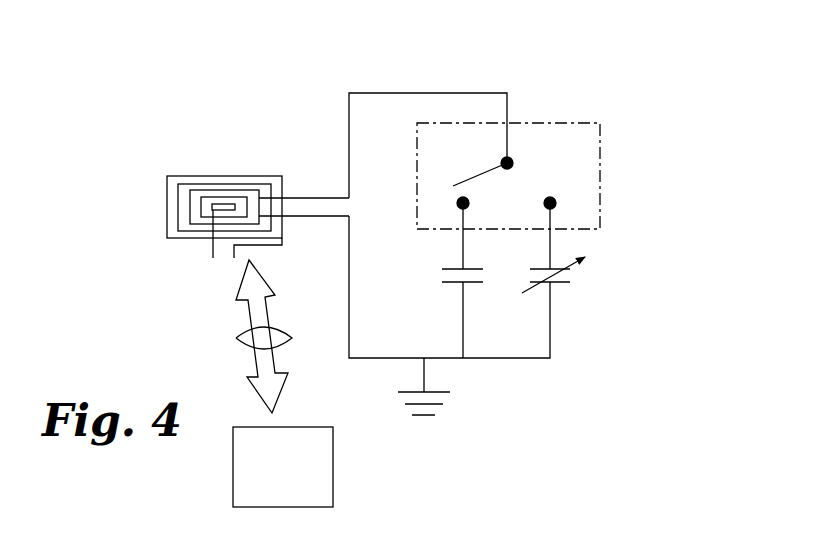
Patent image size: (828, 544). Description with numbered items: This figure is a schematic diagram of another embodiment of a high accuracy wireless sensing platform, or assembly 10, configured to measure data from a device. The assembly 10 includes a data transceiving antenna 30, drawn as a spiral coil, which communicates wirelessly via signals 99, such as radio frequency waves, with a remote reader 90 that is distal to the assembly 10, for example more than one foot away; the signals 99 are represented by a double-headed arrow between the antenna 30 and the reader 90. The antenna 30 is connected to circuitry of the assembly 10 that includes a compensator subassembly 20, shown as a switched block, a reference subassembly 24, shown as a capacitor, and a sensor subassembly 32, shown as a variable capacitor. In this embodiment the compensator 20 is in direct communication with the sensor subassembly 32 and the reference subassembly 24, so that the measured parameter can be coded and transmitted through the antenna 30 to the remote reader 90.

The assembly 10 is at (308, 72).
The data transceiving antenna 30 is at (168, 156).
The compensator subassembly 20 is at (543, 123).
The reference subassembly 24 is at (487, 287).
The sensor subassembly 32 is at (582, 277).
The signals 99 is at (236, 338).
The remote reader 90 is at (333, 462).